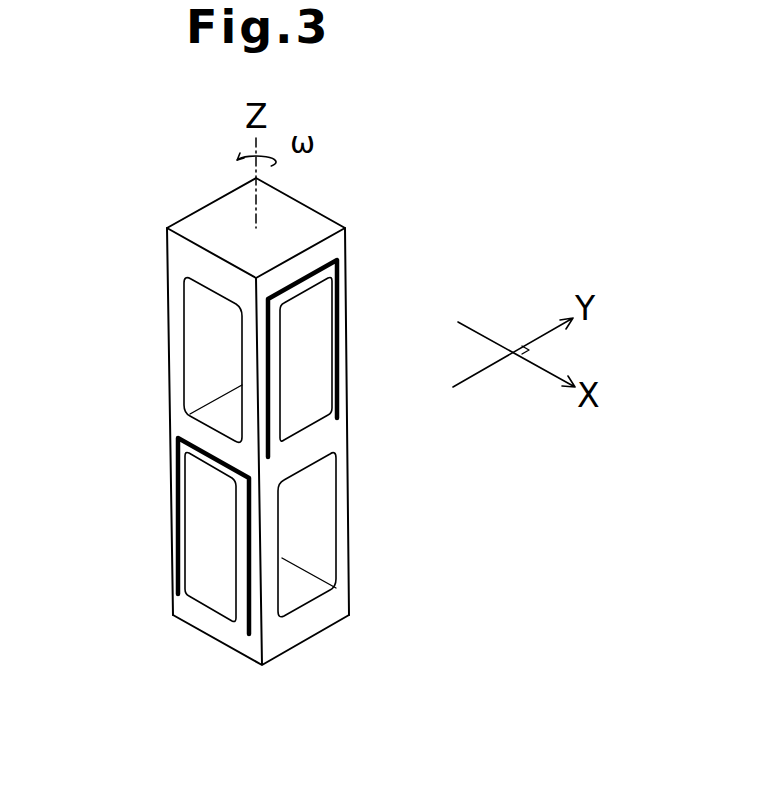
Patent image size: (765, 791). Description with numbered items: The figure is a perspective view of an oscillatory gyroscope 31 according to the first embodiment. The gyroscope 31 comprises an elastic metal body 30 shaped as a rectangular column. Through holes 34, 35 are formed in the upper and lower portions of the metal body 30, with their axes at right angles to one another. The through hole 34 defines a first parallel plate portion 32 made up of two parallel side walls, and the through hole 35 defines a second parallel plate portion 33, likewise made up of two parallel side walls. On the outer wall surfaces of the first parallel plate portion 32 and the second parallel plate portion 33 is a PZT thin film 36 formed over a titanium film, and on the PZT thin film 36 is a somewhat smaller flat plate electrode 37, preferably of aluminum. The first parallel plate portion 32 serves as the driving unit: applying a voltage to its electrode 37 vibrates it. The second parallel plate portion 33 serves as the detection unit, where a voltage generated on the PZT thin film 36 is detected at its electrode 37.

The elastic metal body 30 is at (172, 580).
The oscillatory gyroscope 31 is at (405, 195).
The first parallel plate portion 32 is at (117, 492).
The second parallel plate portion 33 is at (115, 315).
The through hole 34 is at (322, 527).
The through hole 35 is at (197, 353).
The PZT thin film 36 is at (336, 264).
The flat plate electrode 37 is at (322, 329).